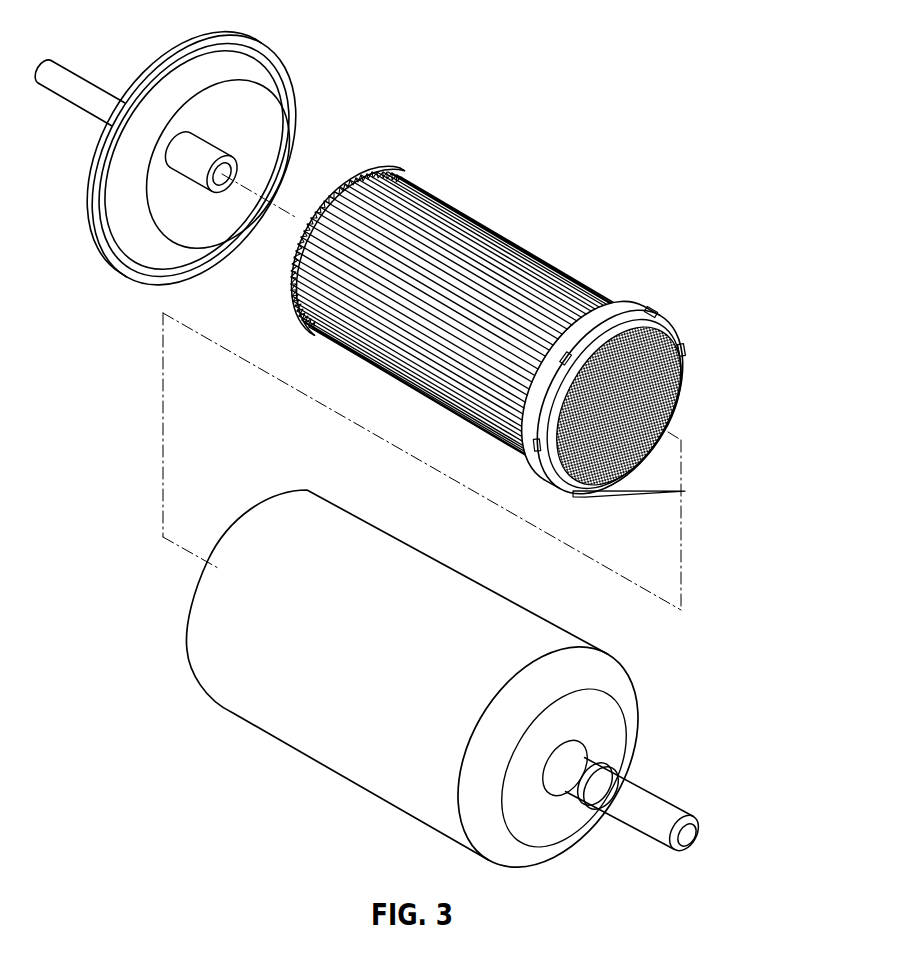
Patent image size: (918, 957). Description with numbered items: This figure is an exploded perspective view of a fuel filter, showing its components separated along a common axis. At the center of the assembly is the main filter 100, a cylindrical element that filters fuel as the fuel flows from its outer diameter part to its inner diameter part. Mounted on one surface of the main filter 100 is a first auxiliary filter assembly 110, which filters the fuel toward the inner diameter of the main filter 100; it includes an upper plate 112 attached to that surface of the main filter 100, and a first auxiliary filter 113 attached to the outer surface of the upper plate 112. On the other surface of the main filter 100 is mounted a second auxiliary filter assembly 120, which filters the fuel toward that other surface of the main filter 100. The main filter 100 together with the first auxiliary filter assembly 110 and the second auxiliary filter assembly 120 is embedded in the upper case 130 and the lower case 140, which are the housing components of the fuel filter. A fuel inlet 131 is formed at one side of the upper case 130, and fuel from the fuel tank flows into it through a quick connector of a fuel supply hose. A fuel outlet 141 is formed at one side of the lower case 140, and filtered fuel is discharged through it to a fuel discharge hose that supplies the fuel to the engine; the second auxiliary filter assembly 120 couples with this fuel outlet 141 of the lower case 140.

The main filter 100 is at (488, 212).
The first auxiliary filter assembly 110 is at (638, 300).
The upper plate 112 is at (655, 317).
The first auxiliary filter 113 is at (682, 343).
The second auxiliary filter assembly 120 is at (406, 163).
The upper case 130 is at (228, 716).
The fuel inlet 131 is at (588, 762).
The lower case 140 is at (290, 66).
The fuel outlet 141 is at (222, 172).